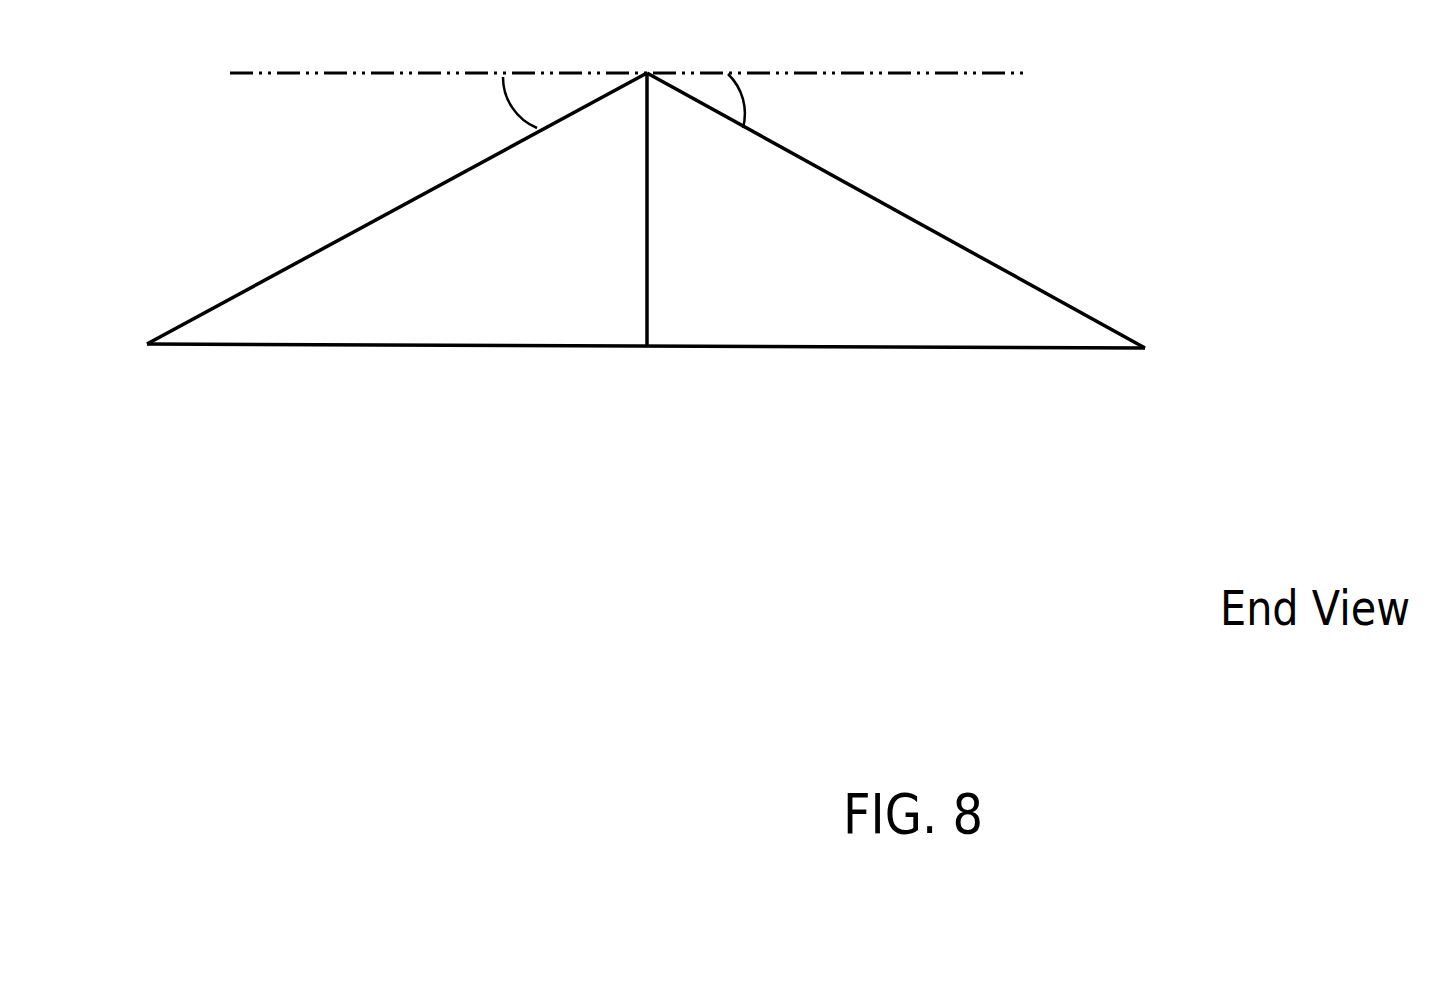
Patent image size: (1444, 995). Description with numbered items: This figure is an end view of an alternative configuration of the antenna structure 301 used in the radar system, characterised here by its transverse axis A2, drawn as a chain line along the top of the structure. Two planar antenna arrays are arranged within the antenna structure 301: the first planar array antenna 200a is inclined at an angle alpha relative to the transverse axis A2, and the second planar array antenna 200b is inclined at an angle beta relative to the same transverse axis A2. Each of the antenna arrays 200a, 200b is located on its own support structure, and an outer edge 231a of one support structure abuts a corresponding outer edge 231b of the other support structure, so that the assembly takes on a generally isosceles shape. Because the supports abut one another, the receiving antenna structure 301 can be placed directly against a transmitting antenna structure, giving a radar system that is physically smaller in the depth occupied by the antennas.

The antenna structure 301 is at (147, 159).
The first planar array antenna 200a is at (397, 208).
The second planar array antenna 200b is at (896, 210).
The outer edge of one support structure 231a is at (645, 266).
The outer edge of another support structure 231b is at (648, 292).
The transverse axis A2 is at (670, 74).